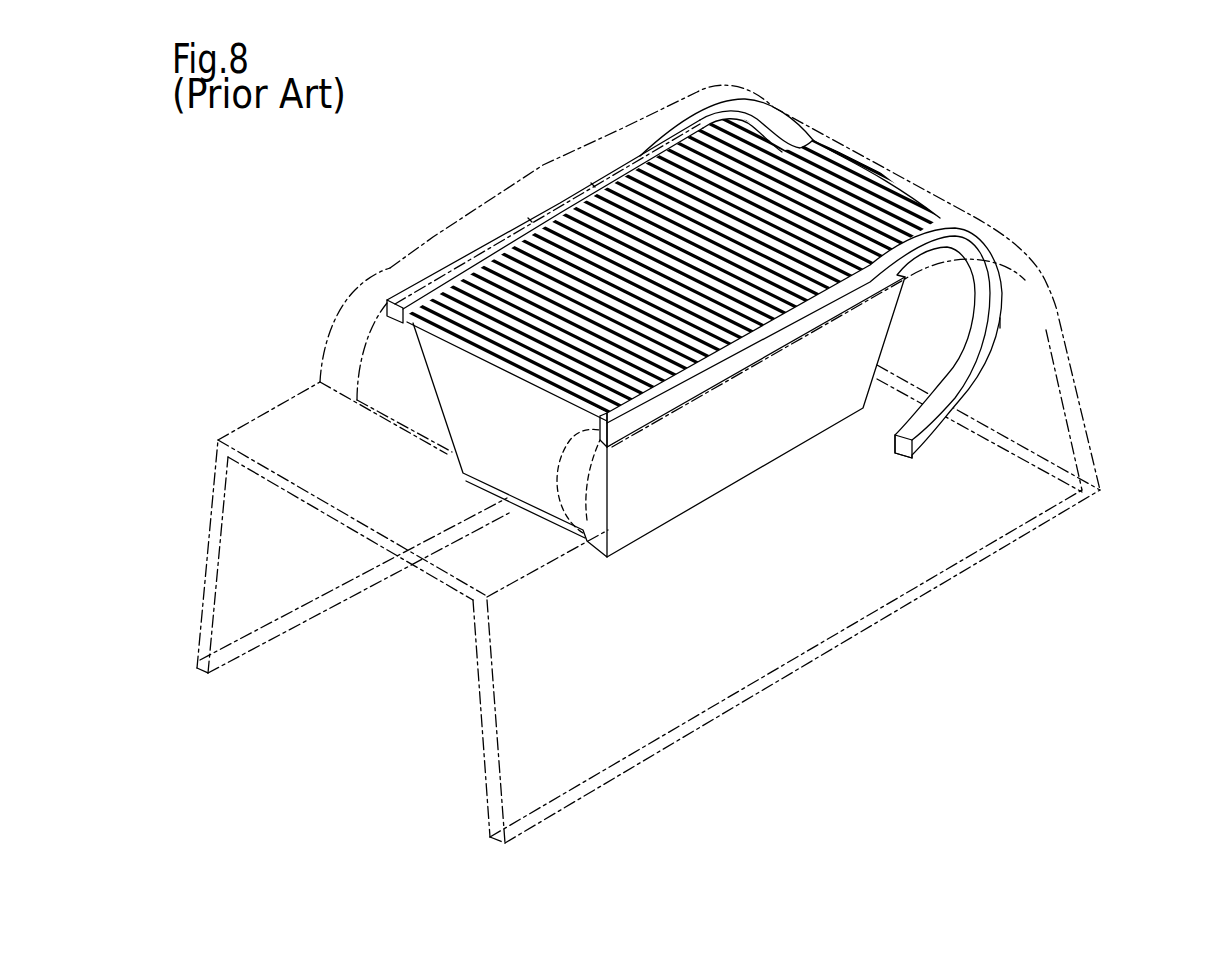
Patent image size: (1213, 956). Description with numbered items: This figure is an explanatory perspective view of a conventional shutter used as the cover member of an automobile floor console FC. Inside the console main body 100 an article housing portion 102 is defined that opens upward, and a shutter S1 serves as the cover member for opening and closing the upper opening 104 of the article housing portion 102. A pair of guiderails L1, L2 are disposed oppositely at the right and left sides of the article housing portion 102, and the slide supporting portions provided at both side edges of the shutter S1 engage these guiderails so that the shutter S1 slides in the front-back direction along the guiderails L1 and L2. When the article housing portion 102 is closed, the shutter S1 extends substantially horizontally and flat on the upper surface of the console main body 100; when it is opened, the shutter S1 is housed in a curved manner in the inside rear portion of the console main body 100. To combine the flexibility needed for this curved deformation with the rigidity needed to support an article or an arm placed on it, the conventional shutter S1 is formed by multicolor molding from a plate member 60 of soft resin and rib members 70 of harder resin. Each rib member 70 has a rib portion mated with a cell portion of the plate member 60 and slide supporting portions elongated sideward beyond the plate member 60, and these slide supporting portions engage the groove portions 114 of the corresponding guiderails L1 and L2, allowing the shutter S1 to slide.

The plate member 60 is at (478, 262).
The rib member 70 is at (516, 383).
The console main body 100 is at (870, 623).
The article housing portion 102 is at (697, 448).
The upper opening 104 is at (640, 157).
The groove portion 114 is at (787, 143).
The floor console FC is at (947, 187).
The guiderail L1 is at (1000, 323).
The guiderail L2 is at (530, 220).
The shutter S1 is at (593, 185).